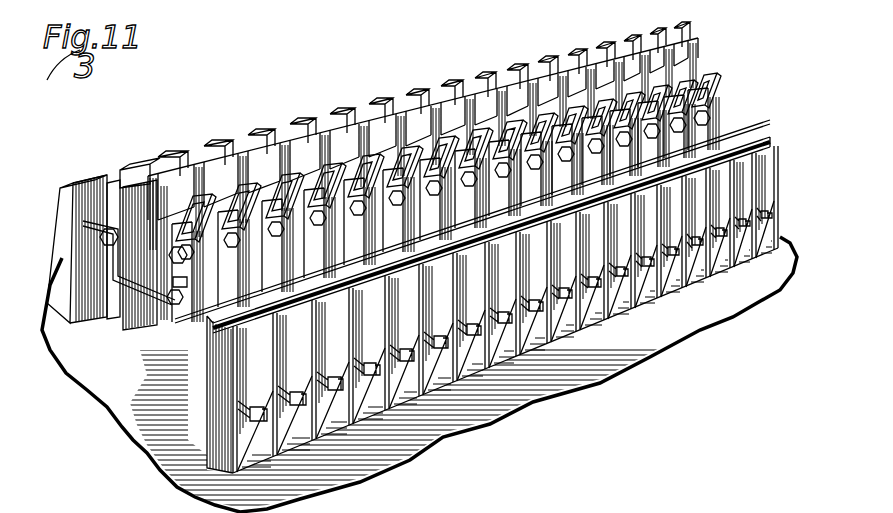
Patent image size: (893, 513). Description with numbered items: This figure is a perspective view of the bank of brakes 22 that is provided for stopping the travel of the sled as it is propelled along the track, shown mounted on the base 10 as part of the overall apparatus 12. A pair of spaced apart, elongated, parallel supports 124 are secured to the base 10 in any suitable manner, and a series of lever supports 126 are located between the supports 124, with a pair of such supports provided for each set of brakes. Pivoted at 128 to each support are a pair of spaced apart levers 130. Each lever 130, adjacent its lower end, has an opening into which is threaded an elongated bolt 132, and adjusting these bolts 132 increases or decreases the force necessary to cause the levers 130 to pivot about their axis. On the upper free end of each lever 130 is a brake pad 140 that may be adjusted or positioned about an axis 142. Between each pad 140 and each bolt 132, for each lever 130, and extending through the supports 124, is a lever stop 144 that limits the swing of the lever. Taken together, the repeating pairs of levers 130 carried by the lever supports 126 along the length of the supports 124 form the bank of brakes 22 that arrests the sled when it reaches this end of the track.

The base 10 is at (112, 383).
The connector module housing 12 is at (63, 267).
The bank of brakes 22 is at (424, 76).
The supports 124 is at (77, 194).
The lever supports 126 is at (95, 322).
The pivot 128 is at (100, 237).
The levers 130 is at (140, 166).
The bolt 132 is at (488, 335).
The brake pad 140 is at (227, 162).
The axis 142 is at (100, 178).
The lever stop 144 is at (237, 373).